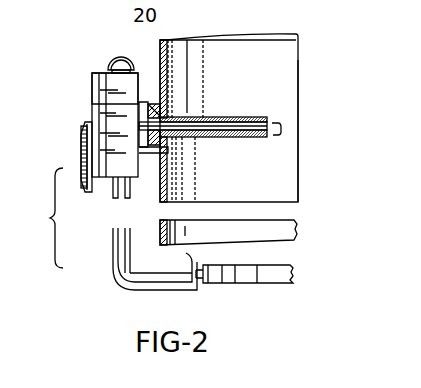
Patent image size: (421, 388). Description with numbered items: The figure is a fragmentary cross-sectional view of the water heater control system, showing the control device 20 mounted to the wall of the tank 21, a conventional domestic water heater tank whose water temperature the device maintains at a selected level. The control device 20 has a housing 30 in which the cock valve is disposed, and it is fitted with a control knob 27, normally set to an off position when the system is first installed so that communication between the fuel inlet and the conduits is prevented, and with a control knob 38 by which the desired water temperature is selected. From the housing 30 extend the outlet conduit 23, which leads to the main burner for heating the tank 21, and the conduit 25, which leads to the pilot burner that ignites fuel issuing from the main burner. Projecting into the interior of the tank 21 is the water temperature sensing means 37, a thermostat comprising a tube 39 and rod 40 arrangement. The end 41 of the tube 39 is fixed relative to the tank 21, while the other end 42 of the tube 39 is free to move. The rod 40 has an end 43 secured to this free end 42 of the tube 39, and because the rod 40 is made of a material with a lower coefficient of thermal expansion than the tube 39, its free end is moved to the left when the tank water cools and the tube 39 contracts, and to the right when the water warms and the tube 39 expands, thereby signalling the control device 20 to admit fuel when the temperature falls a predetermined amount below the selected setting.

The control device 20 is at (135, 23).
The tank 21 is at (180, 40).
The outlet conduit 23 is at (117, 242).
The conduit 25 is at (125, 285).
The control knob 27 is at (122, 56).
The housing 30 is at (97, 91).
The water temperature sensing means 37 is at (206, 146).
The control knob 38 is at (79, 155).
The tube 39 is at (198, 118).
The rod 40 is at (233, 130).
The end of tube 41 is at (178, 110).
The free end of tube 42 is at (298, 124).
The end of rod 43 is at (275, 138).